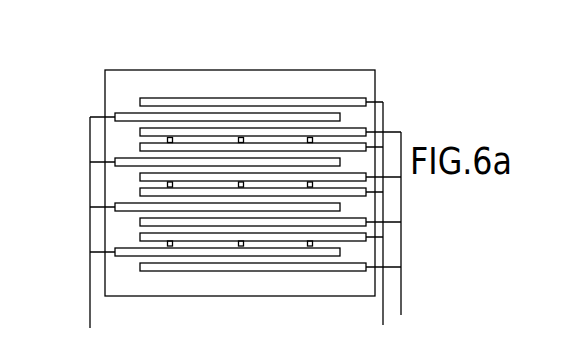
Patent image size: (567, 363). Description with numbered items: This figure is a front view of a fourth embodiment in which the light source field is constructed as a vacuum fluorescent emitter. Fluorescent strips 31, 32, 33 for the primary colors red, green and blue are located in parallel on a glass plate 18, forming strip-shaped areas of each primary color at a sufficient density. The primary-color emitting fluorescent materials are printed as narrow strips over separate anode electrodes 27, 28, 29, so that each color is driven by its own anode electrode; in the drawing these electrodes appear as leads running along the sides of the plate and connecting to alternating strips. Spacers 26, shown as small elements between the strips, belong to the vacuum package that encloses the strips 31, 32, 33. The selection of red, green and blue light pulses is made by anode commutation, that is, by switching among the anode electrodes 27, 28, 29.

The glass plate 18 is at (268, 83).
The spacers 26 is at (170, 137).
The anode electrode 27 is at (383, 325).
The anode electrode 28 is at (401, 315).
The anode electrode 29 is at (90, 328).
The fluorescent strip 31 is at (308, 102).
The fluorescent strip 32 is at (336, 111).
The fluorescent strip 33 is at (366, 129).